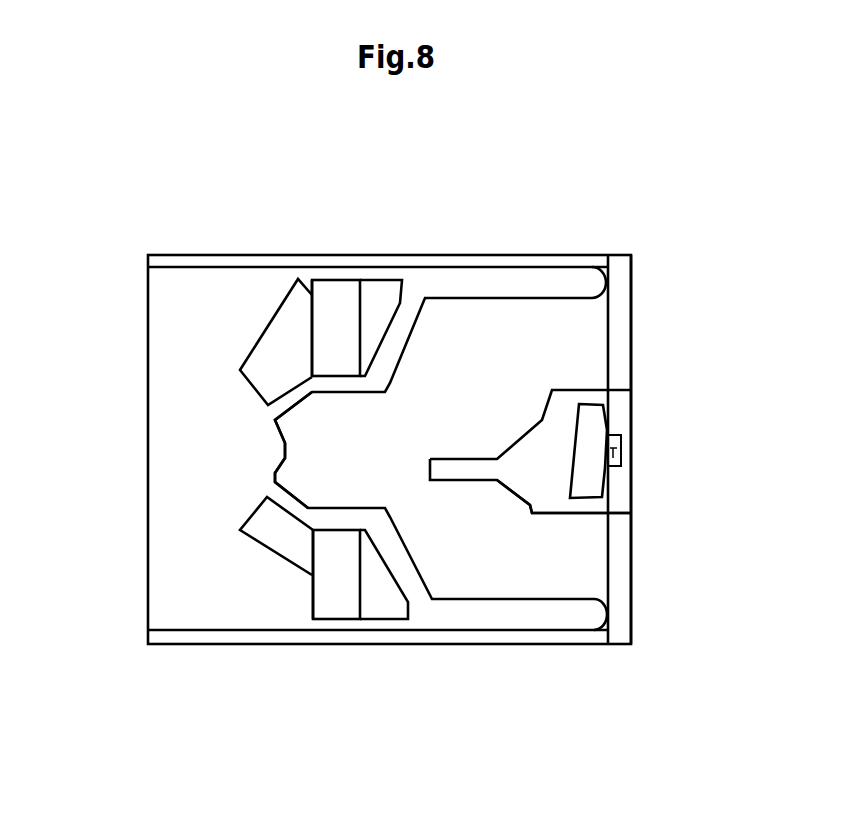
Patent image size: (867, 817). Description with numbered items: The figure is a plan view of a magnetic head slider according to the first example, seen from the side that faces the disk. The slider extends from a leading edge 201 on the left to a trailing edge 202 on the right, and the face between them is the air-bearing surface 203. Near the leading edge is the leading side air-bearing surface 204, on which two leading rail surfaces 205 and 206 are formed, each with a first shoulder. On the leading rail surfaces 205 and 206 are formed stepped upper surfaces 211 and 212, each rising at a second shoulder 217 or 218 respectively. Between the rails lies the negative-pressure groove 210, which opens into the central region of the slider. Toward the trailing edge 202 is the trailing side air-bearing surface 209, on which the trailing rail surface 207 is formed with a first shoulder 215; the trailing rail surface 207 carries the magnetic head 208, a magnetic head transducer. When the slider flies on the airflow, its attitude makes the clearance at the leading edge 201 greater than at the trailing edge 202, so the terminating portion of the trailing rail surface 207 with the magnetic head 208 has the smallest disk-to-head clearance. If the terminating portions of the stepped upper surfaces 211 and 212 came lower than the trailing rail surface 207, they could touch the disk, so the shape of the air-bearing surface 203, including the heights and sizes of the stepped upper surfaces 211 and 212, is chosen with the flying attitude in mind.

The leading edge 201 is at (148, 450).
The trailing edge 202 is at (634, 443).
The air-bearing surface 203 is at (417, 215).
The leading side air-bearing surface 204 is at (170, 312).
The leading rail surface 205 is at (281, 325).
The leading rail surface 206 is at (278, 573).
The trailing rail surface 207 is at (590, 430).
The magnetic head 208 is at (618, 452).
The trailing side air-bearing surface 209 is at (542, 448).
The negative-pressure groove 210 is at (318, 448).
The stepped upper surface 211 is at (339, 295).
The stepped upper surface 212 is at (322, 613).
The first shoulder 215 is at (572, 467).
The second shoulder 217 is at (310, 293).
The second shoulder 218 is at (310, 573).